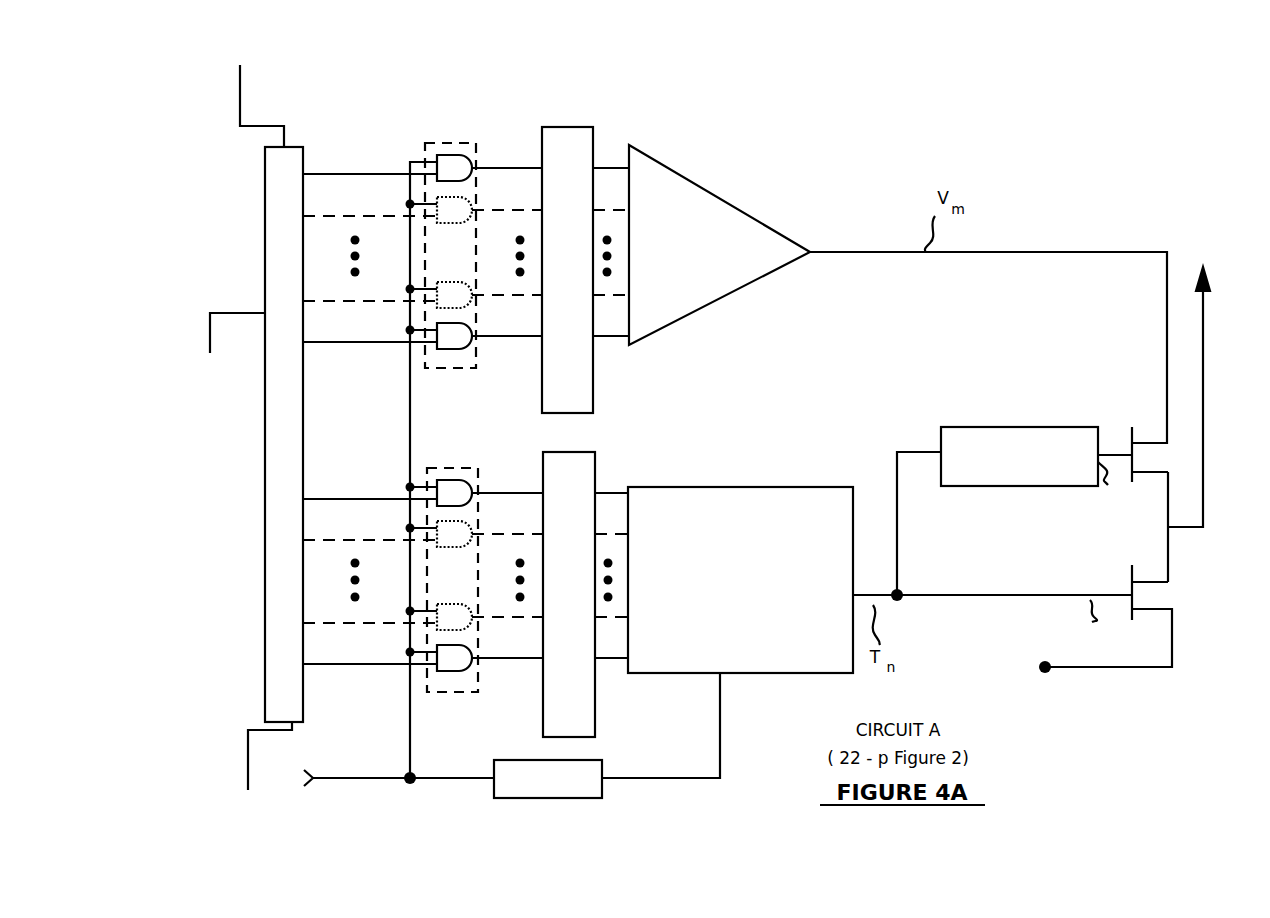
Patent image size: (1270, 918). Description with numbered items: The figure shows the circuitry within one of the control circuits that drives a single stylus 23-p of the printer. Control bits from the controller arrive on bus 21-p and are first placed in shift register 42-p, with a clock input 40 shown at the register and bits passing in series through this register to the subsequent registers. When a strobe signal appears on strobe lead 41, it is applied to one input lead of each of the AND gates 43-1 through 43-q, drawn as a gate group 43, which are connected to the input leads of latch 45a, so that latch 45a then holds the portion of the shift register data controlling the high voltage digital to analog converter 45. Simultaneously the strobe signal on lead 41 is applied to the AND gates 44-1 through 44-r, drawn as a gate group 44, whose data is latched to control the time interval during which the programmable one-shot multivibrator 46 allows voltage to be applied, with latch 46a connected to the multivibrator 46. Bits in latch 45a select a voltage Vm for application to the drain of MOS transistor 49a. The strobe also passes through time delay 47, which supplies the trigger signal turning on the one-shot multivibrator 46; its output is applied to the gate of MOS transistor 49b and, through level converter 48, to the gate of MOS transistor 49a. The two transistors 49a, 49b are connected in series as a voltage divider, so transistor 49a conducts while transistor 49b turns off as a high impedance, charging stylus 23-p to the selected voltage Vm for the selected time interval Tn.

The bus 21-p is at (248, 757).
The stylus 23-p is at (1193, 528).
The clock input 40 is at (246, 313).
The strobe lead 41 is at (380, 783).
The shift register 42-p is at (264, 236).
The AND gate group 43 is at (470, 143).
The AND gate 43-1 is at (445, 153).
The AND gate 43-q is at (450, 349).
The AND gate group 44 is at (475, 692).
The AND gate 44-1 is at (441, 479).
The AND gate 44-r is at (446, 671).
The high voltage digital to analog converter 45 is at (705, 212).
The latching circuit 45a is at (568, 127).
The programmable one-shot multivibrator 46 is at (765, 487).
The latching circuit 46a is at (583, 740).
The time delay 47 is at (524, 800).
The level converter 48 is at (1028, 427).
The MOS transistor 49a is at (1129, 437).
The MOS transistor 49b is at (1130, 576).